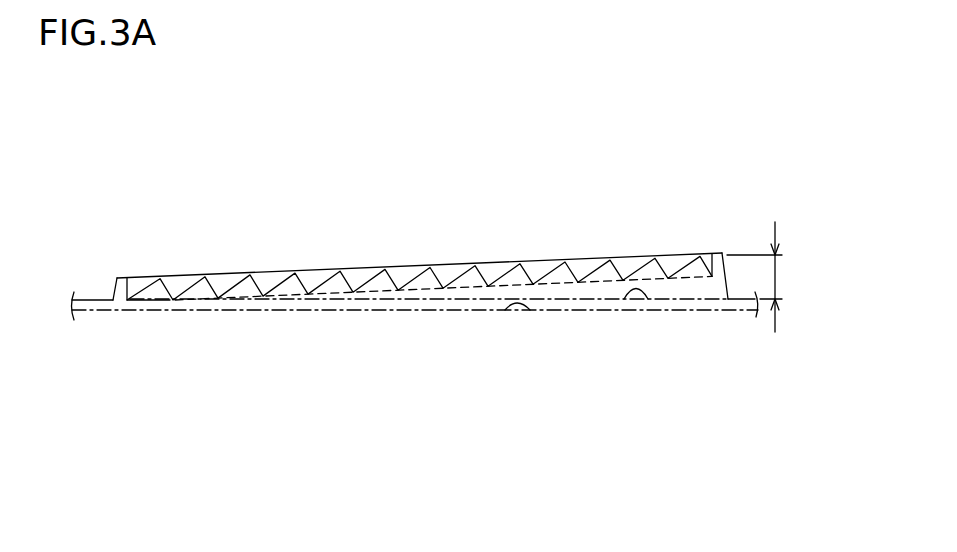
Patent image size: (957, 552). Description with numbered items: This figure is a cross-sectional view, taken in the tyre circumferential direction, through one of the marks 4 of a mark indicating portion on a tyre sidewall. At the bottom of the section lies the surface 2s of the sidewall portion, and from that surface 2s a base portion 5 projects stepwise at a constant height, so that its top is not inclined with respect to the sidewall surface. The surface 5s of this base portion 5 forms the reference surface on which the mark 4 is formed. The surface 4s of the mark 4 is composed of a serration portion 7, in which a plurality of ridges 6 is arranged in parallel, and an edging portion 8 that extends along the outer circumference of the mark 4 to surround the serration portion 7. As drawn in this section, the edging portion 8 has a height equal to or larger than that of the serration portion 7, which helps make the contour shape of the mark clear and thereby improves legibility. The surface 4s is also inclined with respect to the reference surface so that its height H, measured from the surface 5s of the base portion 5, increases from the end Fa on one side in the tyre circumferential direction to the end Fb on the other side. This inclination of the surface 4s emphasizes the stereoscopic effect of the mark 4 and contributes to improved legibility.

The mark 4 is at (530, 225).
The surface of the mark 4s is at (223, 273).
The base portion 5 is at (85, 294).
The surface of the base portion 5s is at (652, 303).
The surface of the sidewall portion 2s is at (530, 318).
The ridges 6 is at (335, 276).
The serration portion 7 is at (445, 276).
The edging portion 8 is at (117, 276).
The end on one side in the tyre circumferential direction Fa is at (108, 268).
The end on the other side in the tyre circumferential direction Fb is at (730, 248).
The height H is at (763, 277).